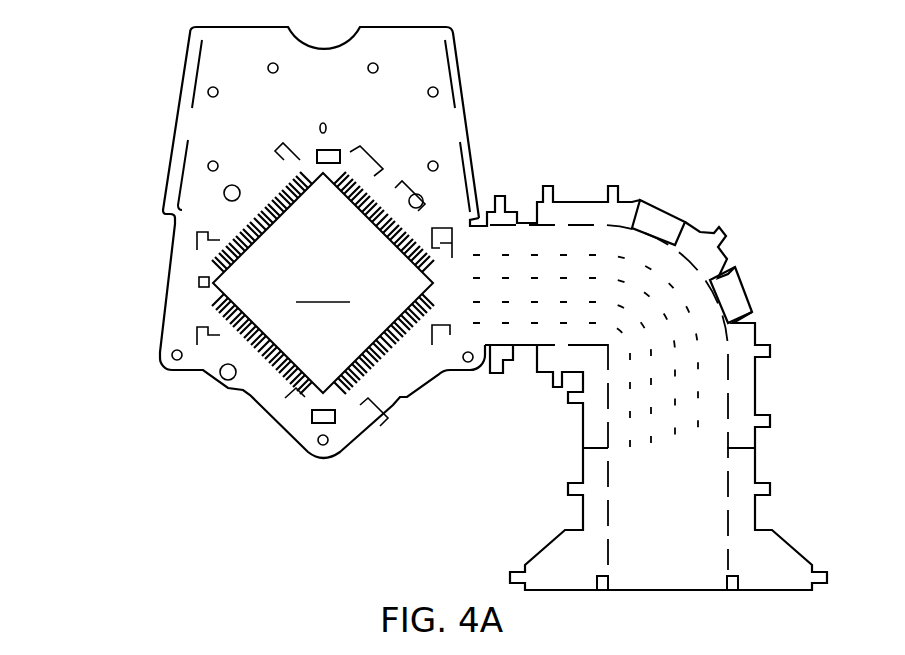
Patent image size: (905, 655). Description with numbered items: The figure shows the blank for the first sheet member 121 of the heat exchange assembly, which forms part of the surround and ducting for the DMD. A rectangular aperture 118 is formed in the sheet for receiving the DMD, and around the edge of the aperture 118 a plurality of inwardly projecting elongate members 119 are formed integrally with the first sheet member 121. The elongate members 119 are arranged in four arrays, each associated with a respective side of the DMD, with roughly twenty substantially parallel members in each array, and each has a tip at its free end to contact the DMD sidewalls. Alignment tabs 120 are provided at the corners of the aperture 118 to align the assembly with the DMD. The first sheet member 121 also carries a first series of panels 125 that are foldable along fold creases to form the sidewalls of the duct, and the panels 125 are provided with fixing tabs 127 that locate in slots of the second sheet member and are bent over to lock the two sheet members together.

The rectangular aperture 118 is at (323, 283).
The elongate members 119 is at (207, 276).
The alignment tabs 120 is at (342, 158).
The first sheet member 121 is at (132, 133).
The first series of panels 125 is at (698, 245).
The fixing tabs 127 is at (728, 244).